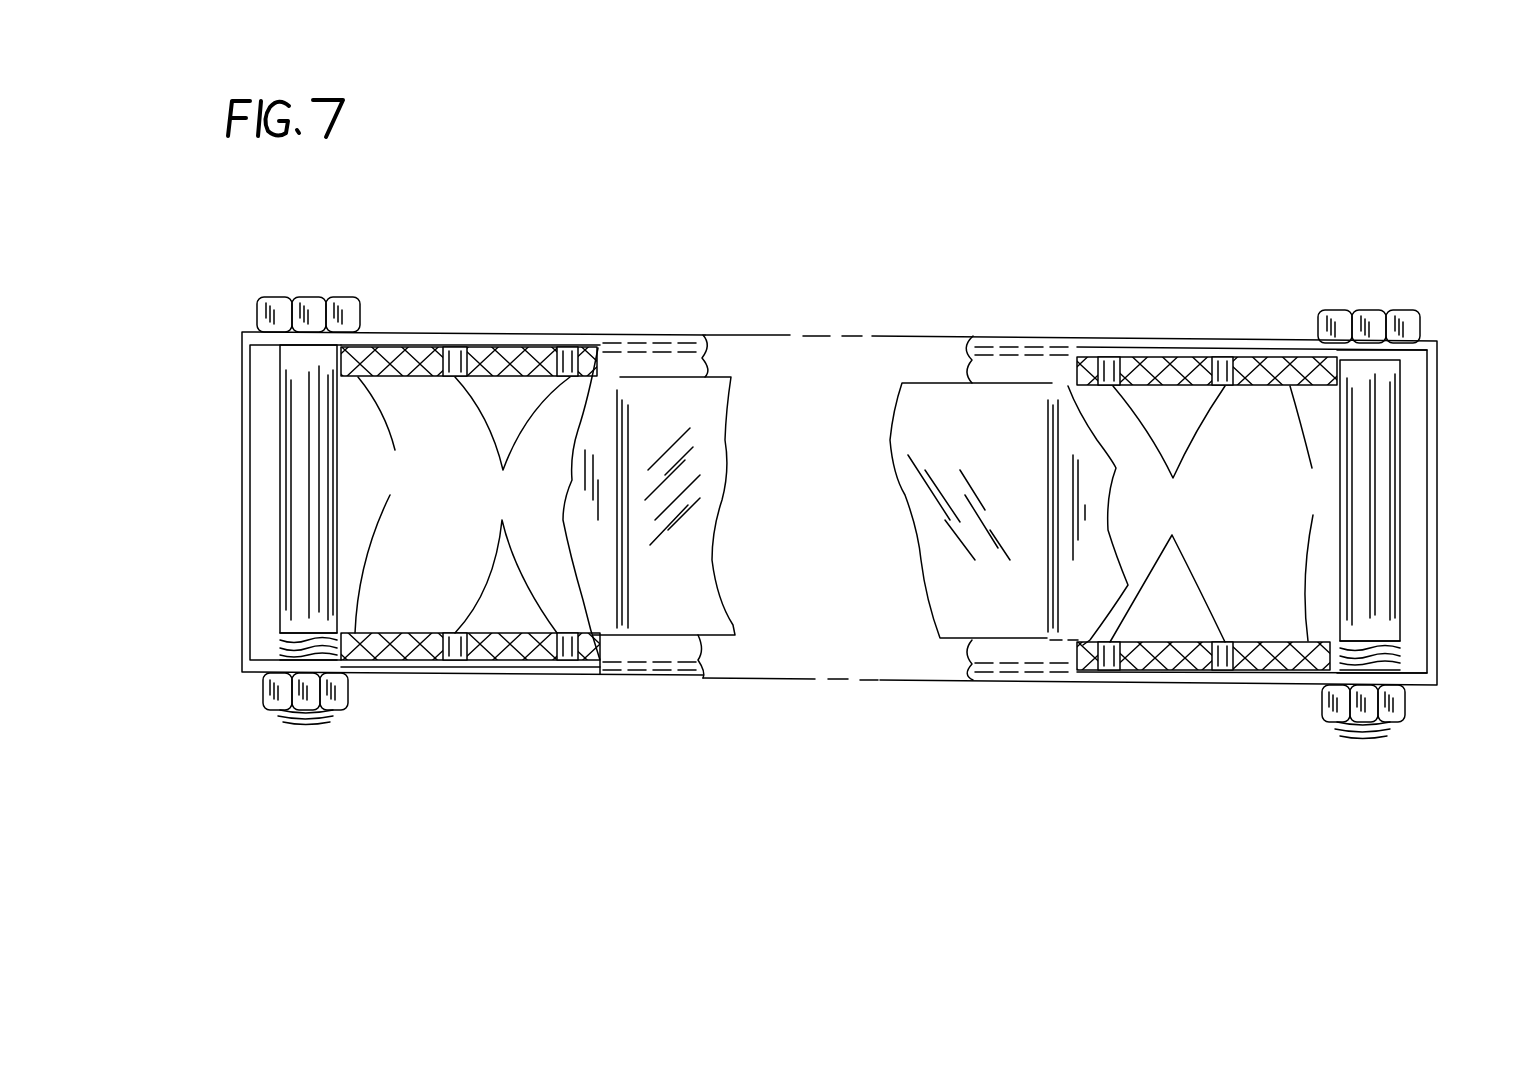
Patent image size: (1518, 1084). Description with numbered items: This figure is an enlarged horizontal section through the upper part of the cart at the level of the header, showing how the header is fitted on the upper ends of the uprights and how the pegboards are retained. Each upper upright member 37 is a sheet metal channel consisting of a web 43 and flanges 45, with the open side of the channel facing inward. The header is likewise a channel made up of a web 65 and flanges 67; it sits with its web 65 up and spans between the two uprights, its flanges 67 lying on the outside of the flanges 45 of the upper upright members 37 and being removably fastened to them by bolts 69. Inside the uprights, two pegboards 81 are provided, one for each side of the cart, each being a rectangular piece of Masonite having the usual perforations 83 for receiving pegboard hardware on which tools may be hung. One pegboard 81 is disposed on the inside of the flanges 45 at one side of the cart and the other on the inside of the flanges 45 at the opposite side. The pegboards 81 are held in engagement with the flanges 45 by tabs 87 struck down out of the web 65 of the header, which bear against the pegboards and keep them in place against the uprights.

The upper upright member 37 is at (238, 416).
The web 43 is at (241, 474).
The flanges 45 is at (378, 348).
The web 65 is at (598, 437).
The flanges 67 is at (498, 334).
The bolts 69 is at (318, 724).
The pegboard 81 is at (848, 509).
The perforations 83 is at (840, 509).
The tabs 87 is at (918, 512).